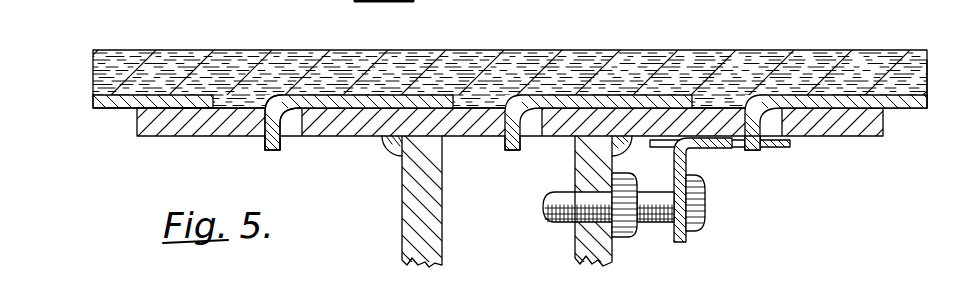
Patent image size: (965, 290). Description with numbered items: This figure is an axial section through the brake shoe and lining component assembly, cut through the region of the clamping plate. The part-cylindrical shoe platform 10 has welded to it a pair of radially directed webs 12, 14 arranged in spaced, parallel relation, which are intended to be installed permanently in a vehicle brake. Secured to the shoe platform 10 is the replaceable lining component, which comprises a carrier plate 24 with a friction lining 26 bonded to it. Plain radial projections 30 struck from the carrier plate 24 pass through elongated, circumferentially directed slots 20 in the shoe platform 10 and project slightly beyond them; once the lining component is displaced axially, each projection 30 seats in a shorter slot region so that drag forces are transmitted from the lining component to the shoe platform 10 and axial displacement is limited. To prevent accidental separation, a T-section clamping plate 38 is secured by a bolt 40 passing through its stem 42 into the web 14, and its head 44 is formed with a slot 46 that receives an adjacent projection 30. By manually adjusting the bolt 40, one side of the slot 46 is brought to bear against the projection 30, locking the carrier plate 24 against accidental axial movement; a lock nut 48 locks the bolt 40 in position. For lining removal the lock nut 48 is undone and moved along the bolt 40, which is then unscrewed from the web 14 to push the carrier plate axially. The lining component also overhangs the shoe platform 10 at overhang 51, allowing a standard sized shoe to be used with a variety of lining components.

The shoe platform 10 is at (860, 136).
The web 12 is at (402, 255).
The web 14 is at (575, 250).
The slot 20 is at (289, 118).
The carrier plate 24 is at (95, 102).
The friction lining 26 is at (872, 62).
The projection 30 is at (262, 143).
The clamping plate 38 is at (713, 148).
The bolt 40 is at (705, 218).
The stem 42 is at (670, 185).
The head 44 is at (780, 147).
The slot 46 is at (739, 149).
The lock nut 48 is at (623, 235).
The overhang 51 is at (925, 86).